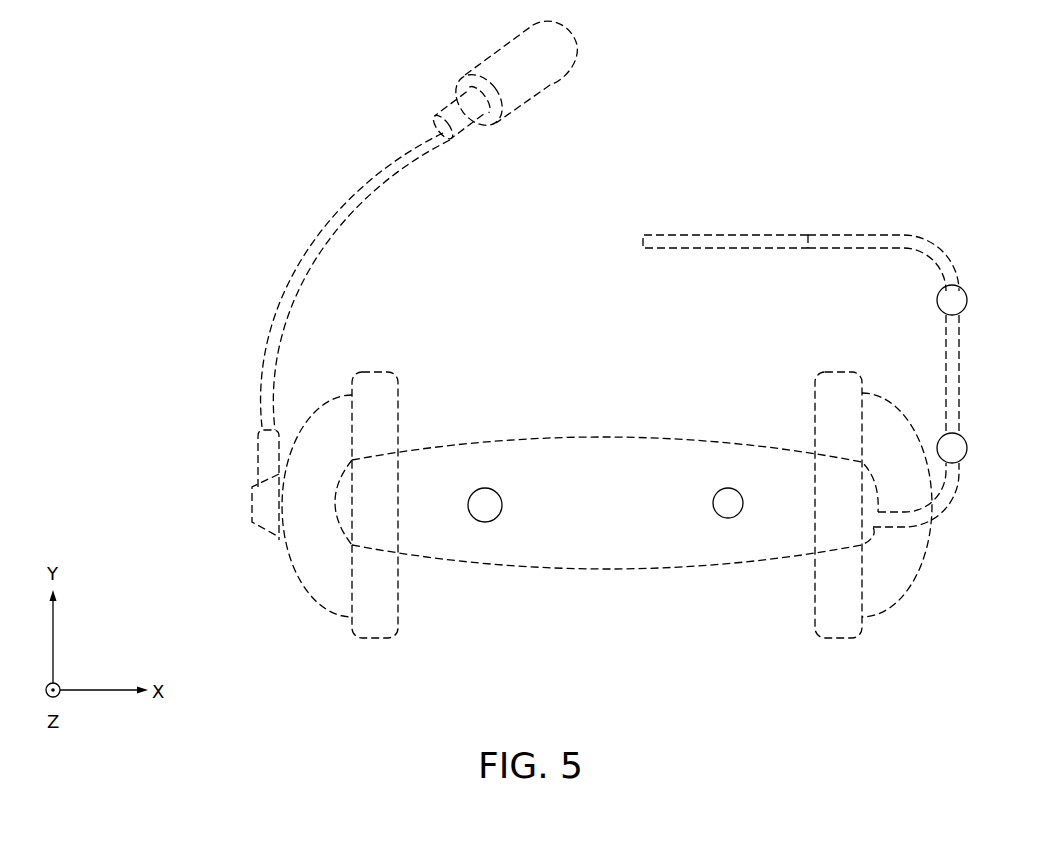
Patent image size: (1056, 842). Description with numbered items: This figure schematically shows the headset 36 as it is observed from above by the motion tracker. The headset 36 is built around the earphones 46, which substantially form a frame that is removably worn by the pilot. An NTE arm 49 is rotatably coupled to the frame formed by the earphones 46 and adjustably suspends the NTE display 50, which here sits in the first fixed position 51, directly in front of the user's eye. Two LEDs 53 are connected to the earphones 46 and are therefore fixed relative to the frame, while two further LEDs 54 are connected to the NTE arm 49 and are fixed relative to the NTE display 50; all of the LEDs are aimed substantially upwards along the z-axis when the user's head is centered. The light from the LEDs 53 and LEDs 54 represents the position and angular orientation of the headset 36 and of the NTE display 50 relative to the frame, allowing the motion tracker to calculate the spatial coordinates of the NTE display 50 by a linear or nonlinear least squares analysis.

The headset 36 is at (343, 280).
The earphones 46 is at (283, 548).
The NTE arm 49 is at (949, 268).
The NTE display 50 is at (772, 234).
The first fixed position 51 is at (958, 220).
The LEDs 53 is at (503, 505).
The LEDs 54 is at (968, 300).